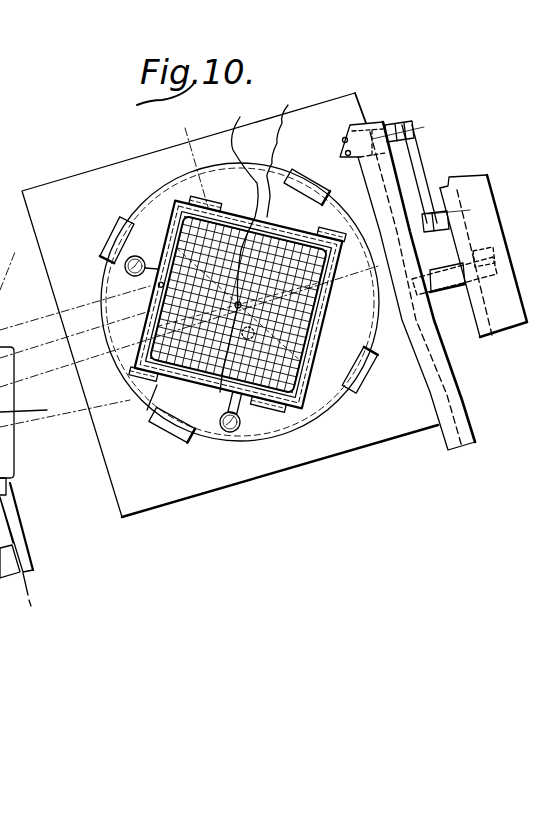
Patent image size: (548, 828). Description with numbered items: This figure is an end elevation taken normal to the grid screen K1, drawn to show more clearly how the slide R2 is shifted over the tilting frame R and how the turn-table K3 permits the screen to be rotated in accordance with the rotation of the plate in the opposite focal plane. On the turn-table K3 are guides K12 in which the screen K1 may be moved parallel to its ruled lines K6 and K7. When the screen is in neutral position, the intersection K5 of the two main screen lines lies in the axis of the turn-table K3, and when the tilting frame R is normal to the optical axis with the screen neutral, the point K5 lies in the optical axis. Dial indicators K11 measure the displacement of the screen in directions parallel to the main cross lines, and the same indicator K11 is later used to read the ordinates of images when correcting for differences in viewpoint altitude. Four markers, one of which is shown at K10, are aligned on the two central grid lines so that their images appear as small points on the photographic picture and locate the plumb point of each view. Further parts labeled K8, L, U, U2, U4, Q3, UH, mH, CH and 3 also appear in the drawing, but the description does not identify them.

The screen K1 is at (355, 93).
The turn-table K3 is at (220, 438).
The intersection of the two main screen lines K5 is at (286, 150).
The ruled line K6 is at (239, 244).
The ruled line K7 is at (178, 202).
The tab K8 is at (273, 415).
The marker K10 is at (252, 336).
The dial indicator K11 is at (258, 522).
The guide K12 is at (352, 228).
The rail L is at (312, 376).
The tilting frame R is at (452, 437).
The slide R2 is at (163, 492).
The bar U is at (417, 163).
The block U2 is at (441, 189).
The bolt U4 is at (407, 122).
The crosspiece Q3 is at (250, 330).
The left member UH is at (0, 370).
The left bar mH is at (0, 430).
The left foot CH is at (0, 455).
The axis line 3 is at (0, 247).